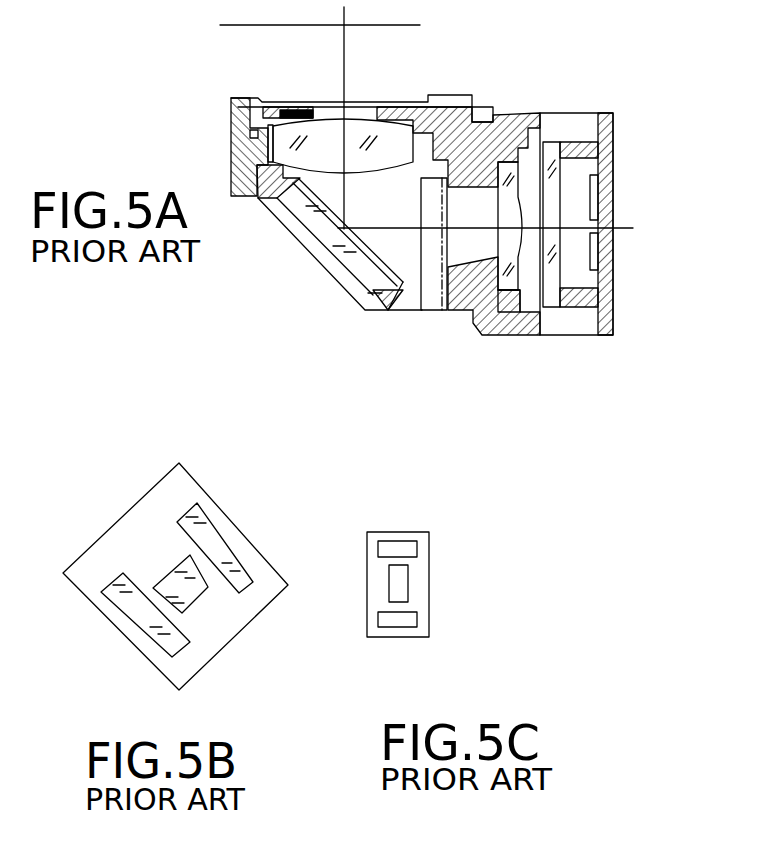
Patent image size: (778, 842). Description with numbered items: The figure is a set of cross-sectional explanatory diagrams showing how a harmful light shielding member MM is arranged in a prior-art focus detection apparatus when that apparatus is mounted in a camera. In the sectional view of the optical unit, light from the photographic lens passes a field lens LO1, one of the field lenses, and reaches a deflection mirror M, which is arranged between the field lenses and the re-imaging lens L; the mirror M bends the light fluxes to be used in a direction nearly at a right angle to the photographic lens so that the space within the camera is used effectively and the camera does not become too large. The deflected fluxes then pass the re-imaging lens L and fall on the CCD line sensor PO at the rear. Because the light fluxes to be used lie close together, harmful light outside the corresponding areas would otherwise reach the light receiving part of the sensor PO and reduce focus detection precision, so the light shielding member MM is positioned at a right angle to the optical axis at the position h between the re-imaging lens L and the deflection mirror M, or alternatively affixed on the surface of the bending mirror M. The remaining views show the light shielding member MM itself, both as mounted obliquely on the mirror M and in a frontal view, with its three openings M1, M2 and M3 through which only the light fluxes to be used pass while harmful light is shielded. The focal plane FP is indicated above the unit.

In FIG. 5A, the focal plane FP is at (420, 25).
In FIG. 5A, the field lens LO1 is at (328, 132).
In FIG. 5A, the re-imaging lens L is at (498, 190).
In FIG. 5A, the CCD line sensor PO is at (592, 183).
In FIG. 5A, the deflection mirror M is at (374, 311).
In FIG. 5B, the deflection mirror M is at (242, 582).
In FIG. 5A, the position h is at (440, 312).
In FIG. 5B, the light shielding member MM is at (188, 483).
In FIG. 5C, the light shielding member MM is at (368, 547).
In FIG. 5B, the opening M1 is at (193, 602).
In FIG. 5C, the opening M1 is at (408, 587).
In FIG. 5B, the opening M2 is at (217, 530).
In FIG. 5C, the opening M2 is at (413, 541).
In FIG. 5B, the opening M3 is at (142, 633).
In FIG. 5C, the opening M3 is at (408, 627).